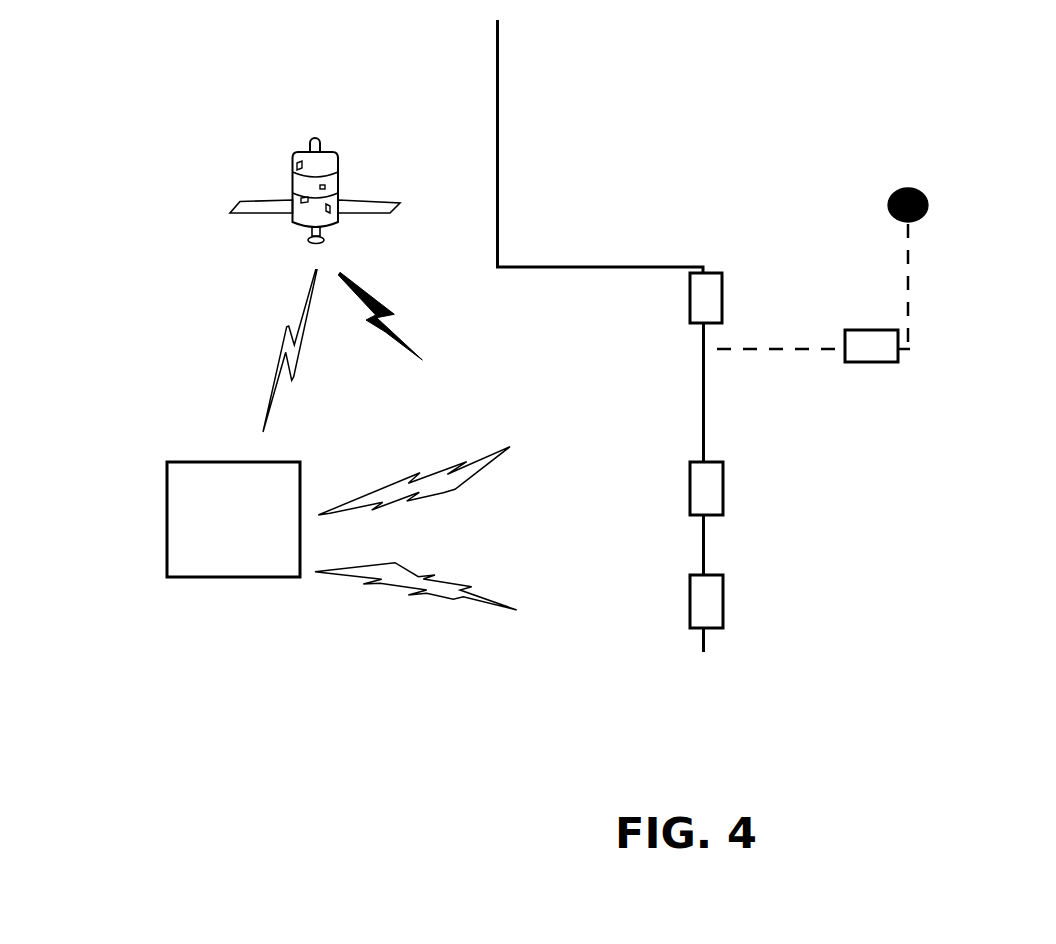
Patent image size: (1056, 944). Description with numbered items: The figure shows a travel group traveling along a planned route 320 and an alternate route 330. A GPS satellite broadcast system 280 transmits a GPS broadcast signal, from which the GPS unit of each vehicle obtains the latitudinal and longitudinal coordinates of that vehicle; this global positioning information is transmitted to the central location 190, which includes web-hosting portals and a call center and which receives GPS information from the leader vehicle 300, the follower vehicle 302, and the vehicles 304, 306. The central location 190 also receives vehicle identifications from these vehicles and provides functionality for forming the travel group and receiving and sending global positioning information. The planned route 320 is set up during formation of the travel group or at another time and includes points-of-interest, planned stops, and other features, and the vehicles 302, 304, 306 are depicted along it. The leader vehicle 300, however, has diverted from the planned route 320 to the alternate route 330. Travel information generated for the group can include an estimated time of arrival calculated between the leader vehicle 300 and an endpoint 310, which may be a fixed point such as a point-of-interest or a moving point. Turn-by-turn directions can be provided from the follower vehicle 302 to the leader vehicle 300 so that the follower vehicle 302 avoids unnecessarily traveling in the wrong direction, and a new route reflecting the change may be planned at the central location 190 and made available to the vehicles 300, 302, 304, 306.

The central location 190 is at (252, 532).
The GPS satellite broadcast system 280 is at (330, 157).
The leader vehicle 300 is at (878, 343).
The follower vehicle 302 is at (717, 298).
The vehicle 304 is at (717, 500).
The vehicle 306 is at (717, 608).
The endpoint 310 is at (928, 192).
The planned route 320 is at (585, 267).
The alternate route 330 is at (803, 350).